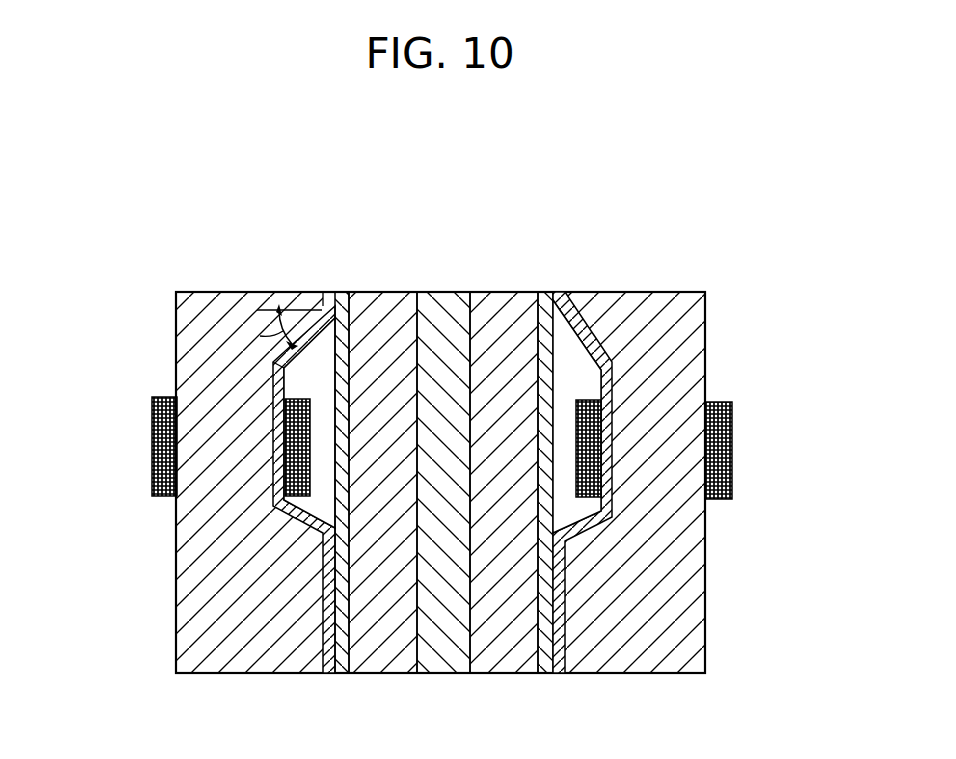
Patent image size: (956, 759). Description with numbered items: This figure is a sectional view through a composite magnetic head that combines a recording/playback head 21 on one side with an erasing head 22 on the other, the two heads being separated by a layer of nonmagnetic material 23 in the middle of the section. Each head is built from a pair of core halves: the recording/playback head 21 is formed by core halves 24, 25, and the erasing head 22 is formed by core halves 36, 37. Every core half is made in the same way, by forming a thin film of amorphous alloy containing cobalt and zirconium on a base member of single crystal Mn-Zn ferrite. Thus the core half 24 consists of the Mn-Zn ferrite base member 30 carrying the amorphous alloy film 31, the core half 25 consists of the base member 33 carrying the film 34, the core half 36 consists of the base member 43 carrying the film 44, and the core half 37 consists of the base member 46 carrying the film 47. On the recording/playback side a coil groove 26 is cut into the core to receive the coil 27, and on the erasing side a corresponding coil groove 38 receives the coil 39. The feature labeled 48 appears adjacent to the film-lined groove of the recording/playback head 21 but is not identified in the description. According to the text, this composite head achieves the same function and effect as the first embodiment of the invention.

The recording/playback head 21 is at (210, 217).
The erasing head 22 is at (710, 217).
The nonmagnetic material 23 is at (444, 310).
The core half 24 is at (218, 237).
The core half 25 is at (325, 237).
The coil groove 26 is at (292, 390).
The coil 27 is at (163, 442).
The Mn-Zn ferrite base member 30 is at (233, 303).
The amorphous alloy film 31 is at (330, 294).
The Mn-Zn ferrite base member 33 is at (399, 300).
The amorphous alloy film 34 is at (344, 300).
The core half 36 is at (480, 238).
The core half 37 is at (605, 238).
The coil groove 38 is at (596, 378).
The coil 39 is at (727, 428).
The Mn-Zn ferrite base member 43 is at (499, 306).
The amorphous alloy film 44 is at (550, 298).
The Mn-Zn ferrite base member 46 is at (676, 306).
The amorphous alloy film 47 is at (565, 310).
The corner gap 48 is at (273, 357).